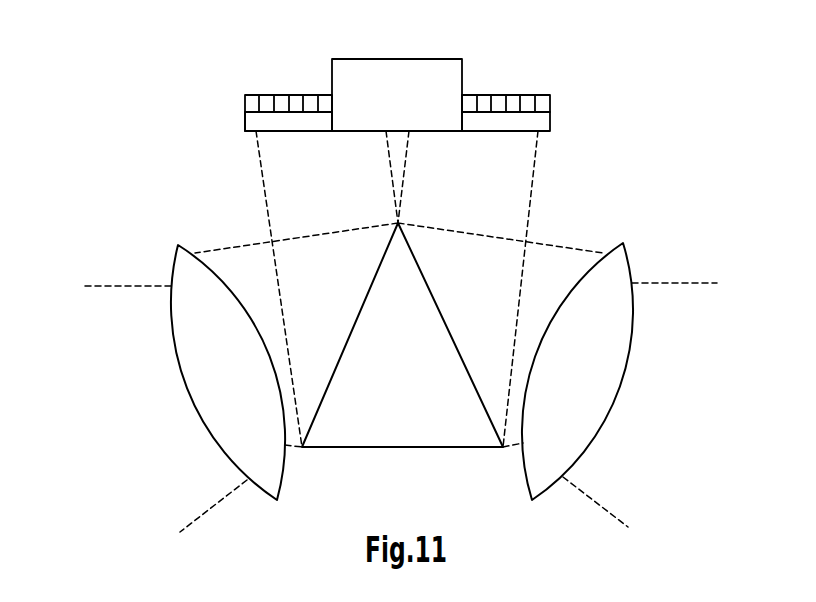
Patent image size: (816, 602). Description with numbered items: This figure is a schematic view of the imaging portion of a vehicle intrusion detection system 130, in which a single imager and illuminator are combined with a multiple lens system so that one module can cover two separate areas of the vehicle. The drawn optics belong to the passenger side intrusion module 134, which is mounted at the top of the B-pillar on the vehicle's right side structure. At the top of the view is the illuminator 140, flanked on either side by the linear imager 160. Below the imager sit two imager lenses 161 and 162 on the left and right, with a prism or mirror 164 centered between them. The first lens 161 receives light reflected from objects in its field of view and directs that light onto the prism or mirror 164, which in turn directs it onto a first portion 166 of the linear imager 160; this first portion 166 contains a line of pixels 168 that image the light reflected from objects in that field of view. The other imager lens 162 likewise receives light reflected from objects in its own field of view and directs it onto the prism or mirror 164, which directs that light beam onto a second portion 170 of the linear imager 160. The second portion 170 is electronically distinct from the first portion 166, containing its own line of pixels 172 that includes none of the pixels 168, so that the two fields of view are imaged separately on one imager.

The intrusion detection system 130 is at (87, 395).
The passenger side intrusion module 134 is at (93, 333).
The illuminator 140 is at (404, 59).
The linear imager 160 is at (232, 93).
The imager lens 161 is at (193, 411).
The imager lens 162 is at (633, 322).
The prism or mirror 164 is at (428, 449).
The first portion of the linear imager 166 is at (245, 120).
The line of pixels 168 is at (301, 103).
The second portion of the linear imager 170 is at (543, 120).
The line of pixels 172 is at (518, 102).